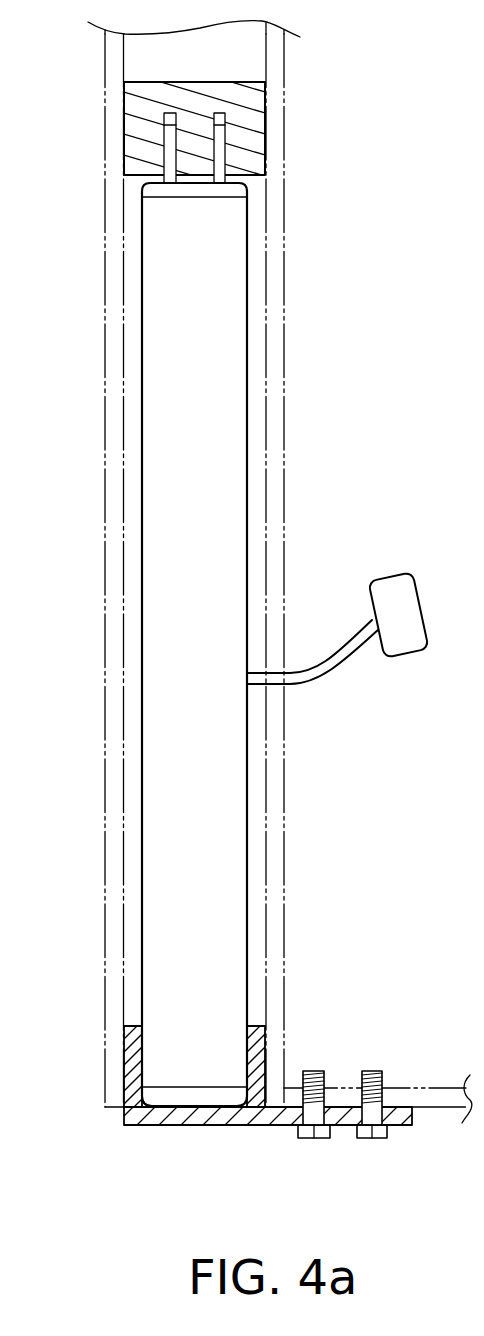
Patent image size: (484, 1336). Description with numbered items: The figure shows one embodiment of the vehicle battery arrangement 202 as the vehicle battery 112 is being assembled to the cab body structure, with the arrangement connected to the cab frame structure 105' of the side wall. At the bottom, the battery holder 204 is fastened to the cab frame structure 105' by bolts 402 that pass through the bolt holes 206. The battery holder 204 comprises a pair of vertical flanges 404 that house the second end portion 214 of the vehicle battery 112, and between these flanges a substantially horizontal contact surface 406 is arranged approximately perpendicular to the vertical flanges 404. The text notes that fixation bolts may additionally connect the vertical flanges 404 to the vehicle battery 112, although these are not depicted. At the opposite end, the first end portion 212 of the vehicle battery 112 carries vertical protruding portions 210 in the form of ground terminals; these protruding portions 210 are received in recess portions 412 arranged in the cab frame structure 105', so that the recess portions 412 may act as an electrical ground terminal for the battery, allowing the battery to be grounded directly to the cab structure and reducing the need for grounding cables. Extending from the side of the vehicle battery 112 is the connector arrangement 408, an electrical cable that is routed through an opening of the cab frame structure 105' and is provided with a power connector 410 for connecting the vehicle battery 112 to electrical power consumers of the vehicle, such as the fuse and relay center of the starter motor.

The cab frame structure 105' is at (294, 616).
The vehicle battery 112 is at (202, 513).
The vehicle battery arrangement 202 is at (322, 264).
The battery holder 204 is at (155, 1125).
The bolt holes 206 is at (392, 1087).
The protruding portions 210 is at (158, 133).
The first end portion 212 is at (195, 188).
The second end portion 214 is at (200, 1040).
The bolts 402 is at (362, 1138).
The vertical flanges 404 is at (133, 1052).
The horizontal contact surface 406 is at (240, 1115).
The connector arrangement 408 is at (308, 676).
The power connector 410 is at (402, 638).
The recess portions 412 is at (168, 142).